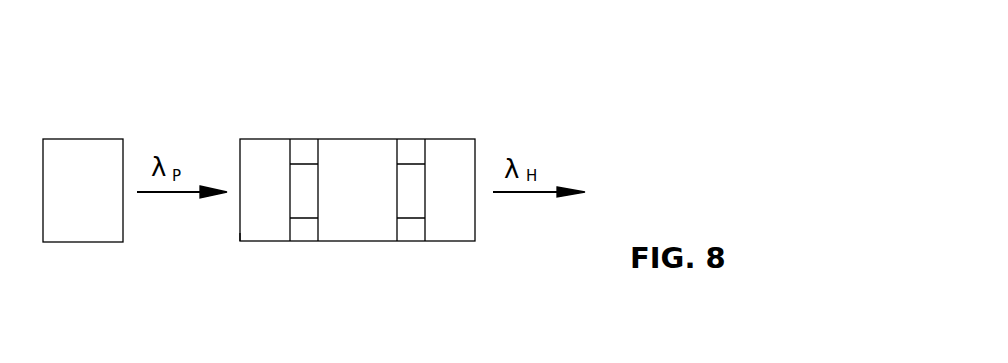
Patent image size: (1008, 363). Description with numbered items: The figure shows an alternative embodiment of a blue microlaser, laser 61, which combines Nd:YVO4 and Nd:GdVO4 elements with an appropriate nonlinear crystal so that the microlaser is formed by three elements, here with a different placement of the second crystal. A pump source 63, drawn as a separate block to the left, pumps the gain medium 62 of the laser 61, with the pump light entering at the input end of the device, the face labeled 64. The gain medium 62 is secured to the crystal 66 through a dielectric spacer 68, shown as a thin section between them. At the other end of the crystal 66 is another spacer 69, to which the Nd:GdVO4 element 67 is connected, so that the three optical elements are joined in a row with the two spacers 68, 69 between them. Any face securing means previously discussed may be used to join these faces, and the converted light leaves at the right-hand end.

The laser 61 is at (395, 95).
The gain medium 62 is at (255, 148).
The source 63 is at (82, 139).
The input end face 64 is at (240, 232).
The crystal 66 is at (354, 150).
The Nd:GdVO4 element 67 is at (448, 150).
The dielectric spacer 68 is at (305, 232).
The spacer 69 is at (410, 232).